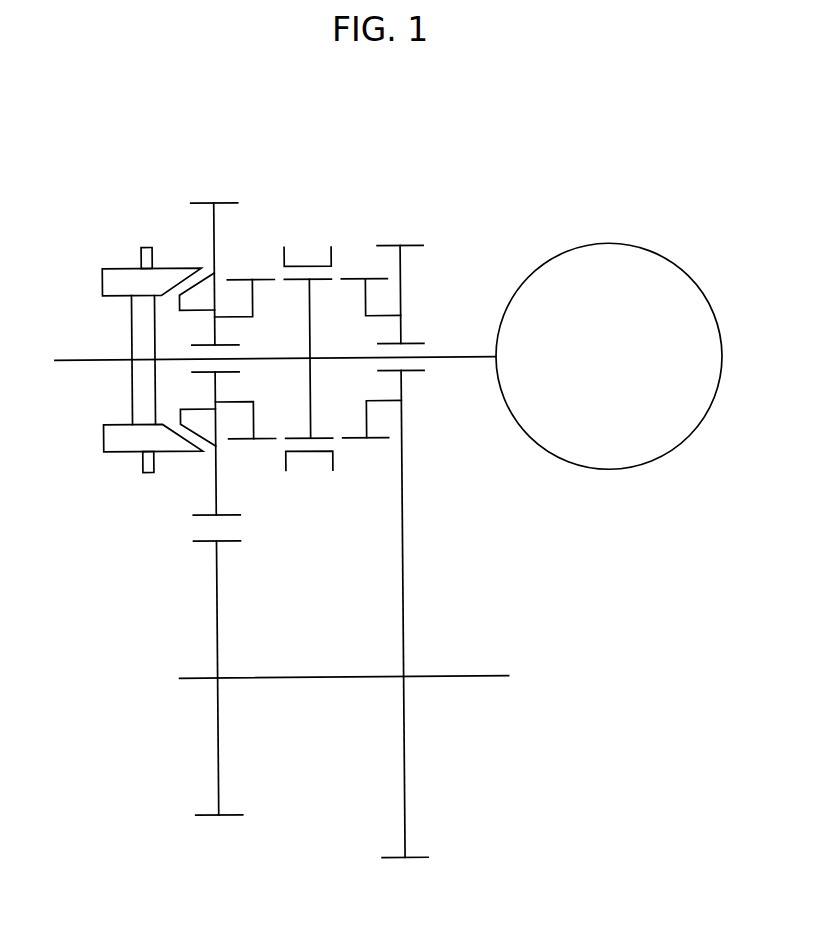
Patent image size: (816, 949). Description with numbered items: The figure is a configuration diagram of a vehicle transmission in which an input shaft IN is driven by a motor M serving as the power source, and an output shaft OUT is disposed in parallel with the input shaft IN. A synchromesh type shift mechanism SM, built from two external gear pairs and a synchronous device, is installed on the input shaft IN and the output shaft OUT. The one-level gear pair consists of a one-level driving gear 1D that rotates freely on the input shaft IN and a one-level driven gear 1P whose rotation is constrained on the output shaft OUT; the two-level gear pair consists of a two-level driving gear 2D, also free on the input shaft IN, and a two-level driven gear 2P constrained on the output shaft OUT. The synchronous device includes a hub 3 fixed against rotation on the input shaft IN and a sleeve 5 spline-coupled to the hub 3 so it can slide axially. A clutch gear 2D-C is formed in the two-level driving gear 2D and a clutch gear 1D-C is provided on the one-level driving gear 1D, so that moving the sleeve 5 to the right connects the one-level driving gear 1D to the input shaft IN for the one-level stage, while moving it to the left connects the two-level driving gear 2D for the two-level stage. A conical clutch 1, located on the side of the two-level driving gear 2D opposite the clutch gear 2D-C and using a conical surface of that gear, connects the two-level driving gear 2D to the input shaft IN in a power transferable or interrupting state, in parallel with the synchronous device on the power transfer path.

The conical clutch 1 is at (168, 258).
The two-level driving gear 2D is at (223, 202).
The two-level driven gear 2P is at (226, 815).
The one-level driving gear 1D is at (413, 247).
The one-level driven gear 1P is at (413, 860).
The clutch gear 2D-C is at (264, 280).
The clutch gear 1D-C is at (353, 281).
The hub 3 is at (284, 439).
The sleeve 5 is at (286, 471).
The input shaft IN is at (82, 359).
The output shaft OUT is at (491, 678).
The motor M is at (609, 356).
The shift mechanism SM is at (362, 150).